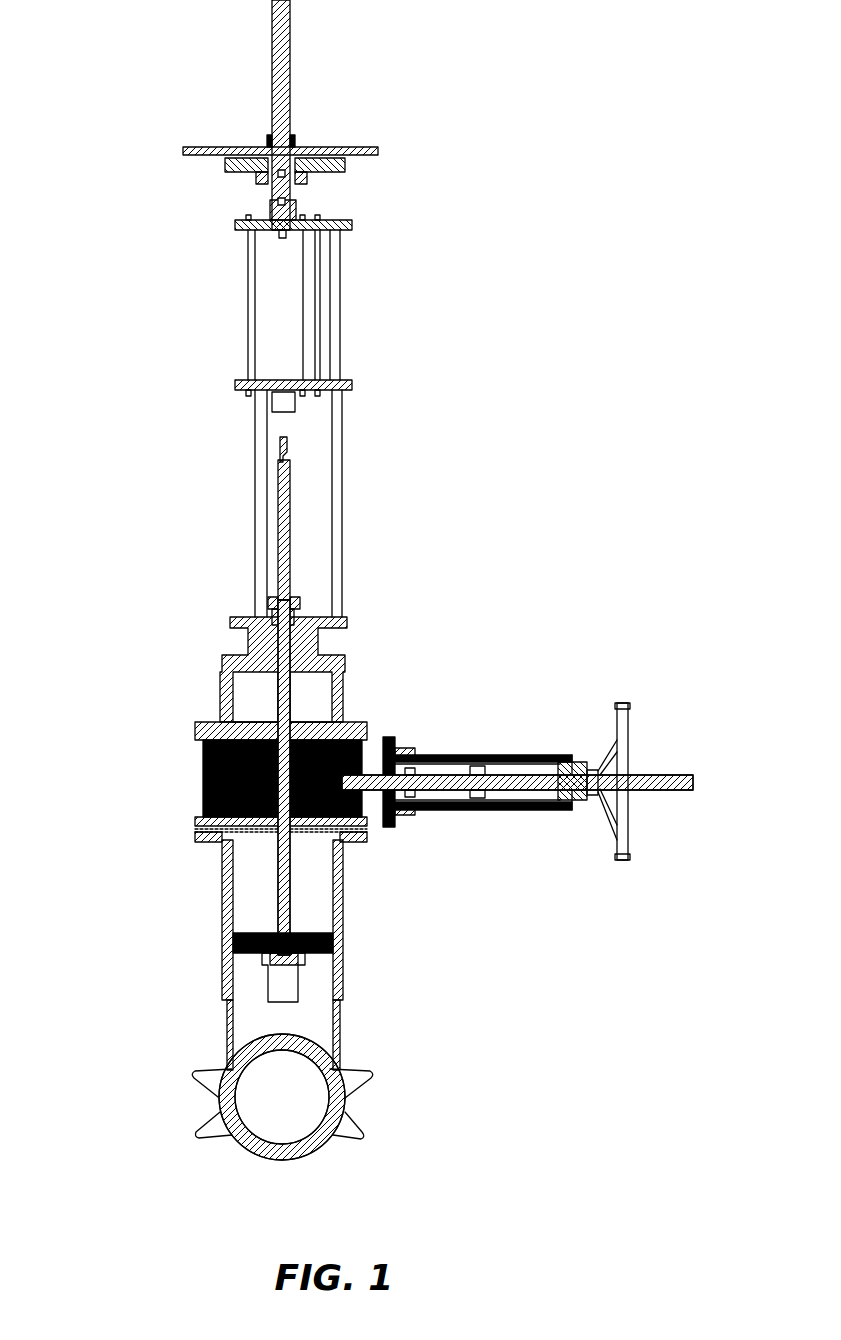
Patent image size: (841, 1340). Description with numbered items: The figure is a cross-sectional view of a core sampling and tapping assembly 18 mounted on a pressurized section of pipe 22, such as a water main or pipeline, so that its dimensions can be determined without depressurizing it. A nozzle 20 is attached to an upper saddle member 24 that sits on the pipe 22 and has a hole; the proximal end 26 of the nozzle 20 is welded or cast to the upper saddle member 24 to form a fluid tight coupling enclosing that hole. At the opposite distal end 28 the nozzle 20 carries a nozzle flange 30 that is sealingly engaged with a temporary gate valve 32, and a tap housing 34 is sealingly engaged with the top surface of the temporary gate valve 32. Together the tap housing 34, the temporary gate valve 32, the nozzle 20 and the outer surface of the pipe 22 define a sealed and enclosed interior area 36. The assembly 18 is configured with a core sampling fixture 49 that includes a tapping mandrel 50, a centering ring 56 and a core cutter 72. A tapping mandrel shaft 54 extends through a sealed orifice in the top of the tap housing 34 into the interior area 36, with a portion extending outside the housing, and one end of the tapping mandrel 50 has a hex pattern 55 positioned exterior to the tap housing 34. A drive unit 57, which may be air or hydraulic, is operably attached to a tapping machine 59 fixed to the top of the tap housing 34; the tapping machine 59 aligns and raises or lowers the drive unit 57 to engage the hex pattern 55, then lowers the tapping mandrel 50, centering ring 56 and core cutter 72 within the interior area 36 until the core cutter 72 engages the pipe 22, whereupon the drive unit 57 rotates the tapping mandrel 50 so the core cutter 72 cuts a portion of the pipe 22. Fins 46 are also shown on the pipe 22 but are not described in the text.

The core sampling and tapping assembly 18 is at (423, 604).
The core sampling fixture 49 is at (423, 604).
The nozzle 20 is at (226, 906).
The pipe 22 is at (290, 1162).
The upper saddle member 24 is at (226, 1070).
The proximal end 26 is at (343, 1017).
The distal end 28 is at (220, 853).
The nozzle flange 30 is at (352, 840).
The temporary gate valve 32 is at (453, 772).
The tap housing 34 is at (340, 668).
The sealed and enclosed interior area 36 is at (256, 693).
The fins 46 is at (372, 1076).
The tapping mandrel 50 is at (286, 490).
The tapping mandrel shaft 54 is at (291, 705).
The hex pattern 55 is at (285, 452).
The centering ring 56 is at (335, 943).
The drive unit 57 is at (262, 297).
The tapping machine 59 is at (357, 148).
The core cutter 72 is at (274, 993).